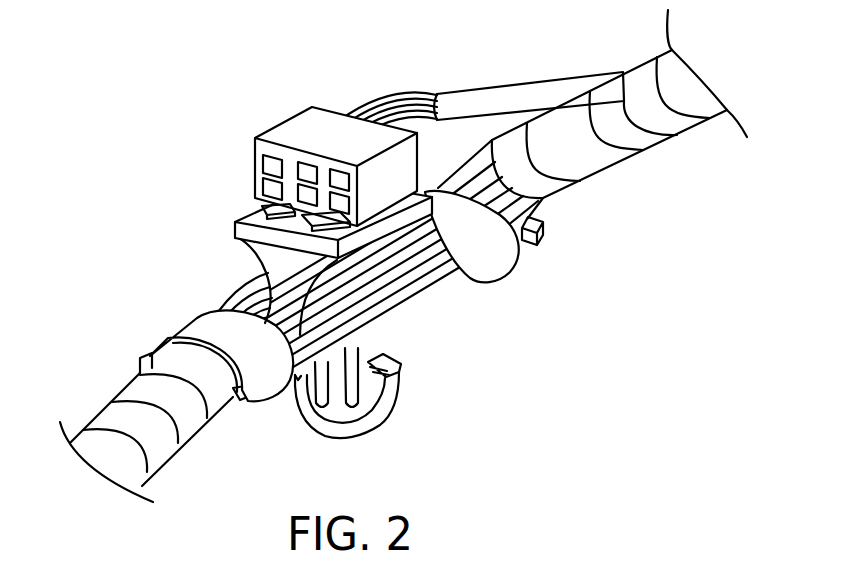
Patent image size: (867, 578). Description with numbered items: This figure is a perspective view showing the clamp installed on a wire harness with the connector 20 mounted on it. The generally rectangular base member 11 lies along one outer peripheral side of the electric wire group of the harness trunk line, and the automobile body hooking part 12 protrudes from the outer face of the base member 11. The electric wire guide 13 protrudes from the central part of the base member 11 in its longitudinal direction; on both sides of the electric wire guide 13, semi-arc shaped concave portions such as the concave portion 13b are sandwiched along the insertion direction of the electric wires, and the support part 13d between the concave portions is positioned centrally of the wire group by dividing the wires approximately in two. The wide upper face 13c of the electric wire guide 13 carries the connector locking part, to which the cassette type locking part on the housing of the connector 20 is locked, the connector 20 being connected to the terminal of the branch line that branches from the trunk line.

The connector 20 is at (325, 117).
The electric wire guide 13 is at (346, 279).
The concave portion 13b is at (396, 229).
The upper face 13c is at (235, 221).
The support part 13d is at (270, 258).
The base member 11 is at (421, 294).
The automobile body hooking part 12 is at (398, 412).